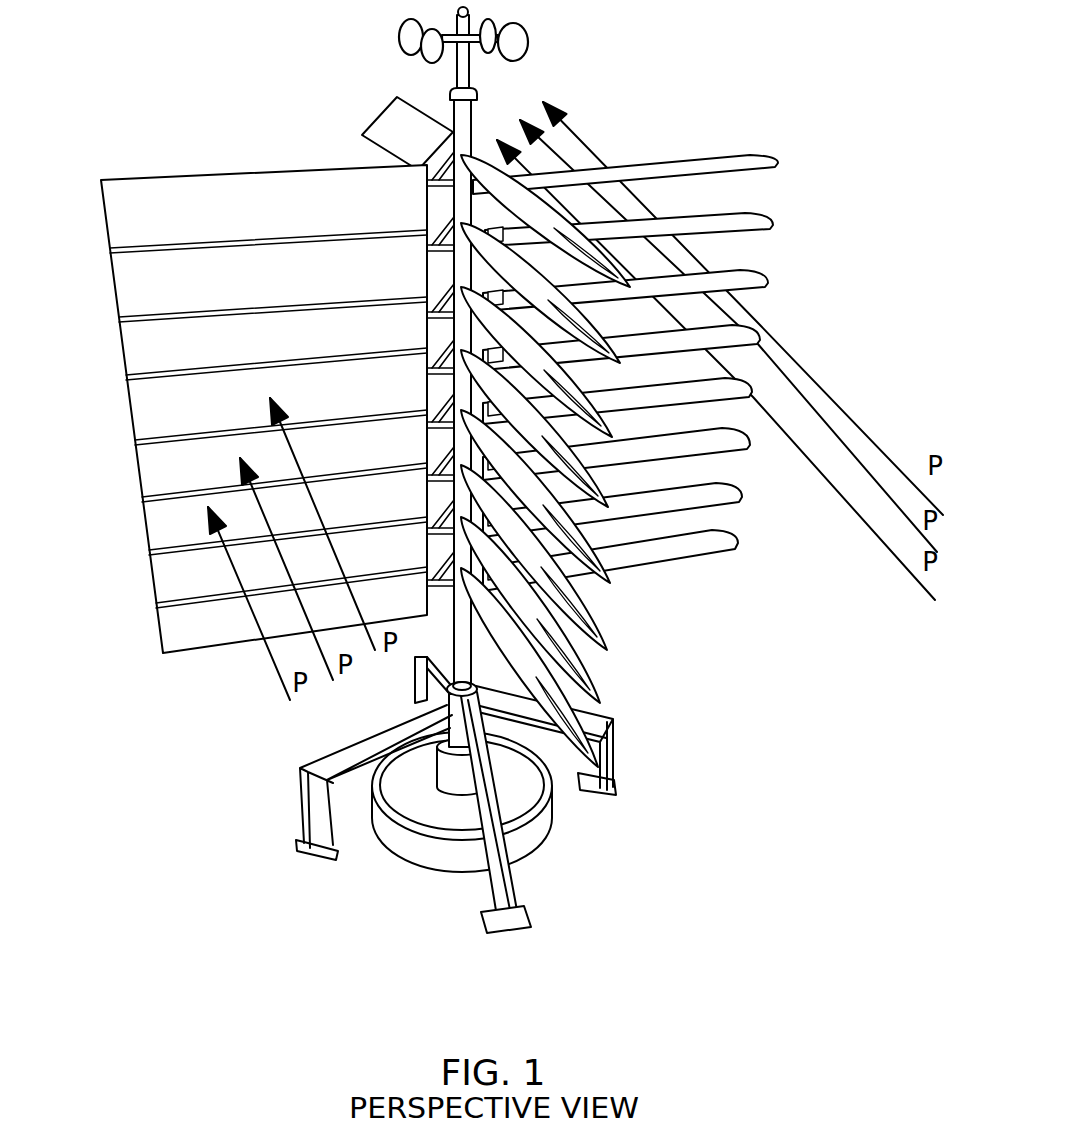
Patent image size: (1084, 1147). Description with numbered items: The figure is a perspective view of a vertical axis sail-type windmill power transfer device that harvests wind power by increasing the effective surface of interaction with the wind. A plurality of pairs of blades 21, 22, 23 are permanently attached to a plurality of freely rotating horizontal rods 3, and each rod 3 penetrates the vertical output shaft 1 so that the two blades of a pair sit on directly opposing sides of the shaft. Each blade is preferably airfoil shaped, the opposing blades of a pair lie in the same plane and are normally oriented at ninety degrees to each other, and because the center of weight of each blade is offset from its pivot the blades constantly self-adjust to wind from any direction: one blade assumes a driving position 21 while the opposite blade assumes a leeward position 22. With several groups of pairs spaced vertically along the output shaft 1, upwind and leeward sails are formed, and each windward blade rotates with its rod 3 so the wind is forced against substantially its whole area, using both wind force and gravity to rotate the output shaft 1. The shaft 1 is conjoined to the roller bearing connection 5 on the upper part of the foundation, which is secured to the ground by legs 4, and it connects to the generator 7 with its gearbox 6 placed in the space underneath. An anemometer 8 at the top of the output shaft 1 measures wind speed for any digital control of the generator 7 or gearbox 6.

The vertical output shaft 1 is at (462, 118).
The horizontal rod 3 is at (427, 188).
The leg 4 is at (612, 740).
The roller bearing connection 5 is at (448, 700).
The gearbox 6 is at (455, 780).
The generator 7 is at (420, 858).
The anemometer 8 is at (528, 38).
The blade in driving position 21 is at (125, 225).
The blade in leeward position 22 is at (778, 162).
The blade 23 is at (390, 125).